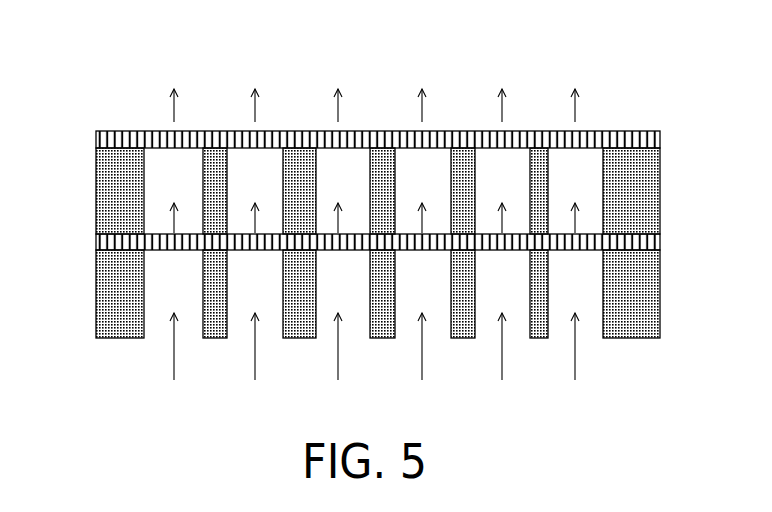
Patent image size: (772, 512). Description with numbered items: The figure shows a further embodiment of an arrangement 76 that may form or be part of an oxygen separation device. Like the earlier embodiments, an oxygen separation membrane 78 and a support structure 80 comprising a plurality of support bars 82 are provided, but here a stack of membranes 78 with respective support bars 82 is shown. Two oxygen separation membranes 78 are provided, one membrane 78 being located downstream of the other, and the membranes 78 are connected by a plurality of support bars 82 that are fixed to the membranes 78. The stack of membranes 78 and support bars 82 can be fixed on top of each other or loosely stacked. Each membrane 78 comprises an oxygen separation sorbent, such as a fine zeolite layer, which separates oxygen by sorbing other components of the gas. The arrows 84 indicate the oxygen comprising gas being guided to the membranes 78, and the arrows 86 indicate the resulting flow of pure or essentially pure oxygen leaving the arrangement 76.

The arrangement 76 is at (383, 221).
The oxygen separation membrane 78 is at (660, 140).
The support structure 80 is at (78, 192).
The support bars 82 is at (660, 228).
The arrows 84 is at (575, 367).
The arrows 86 is at (575, 112).